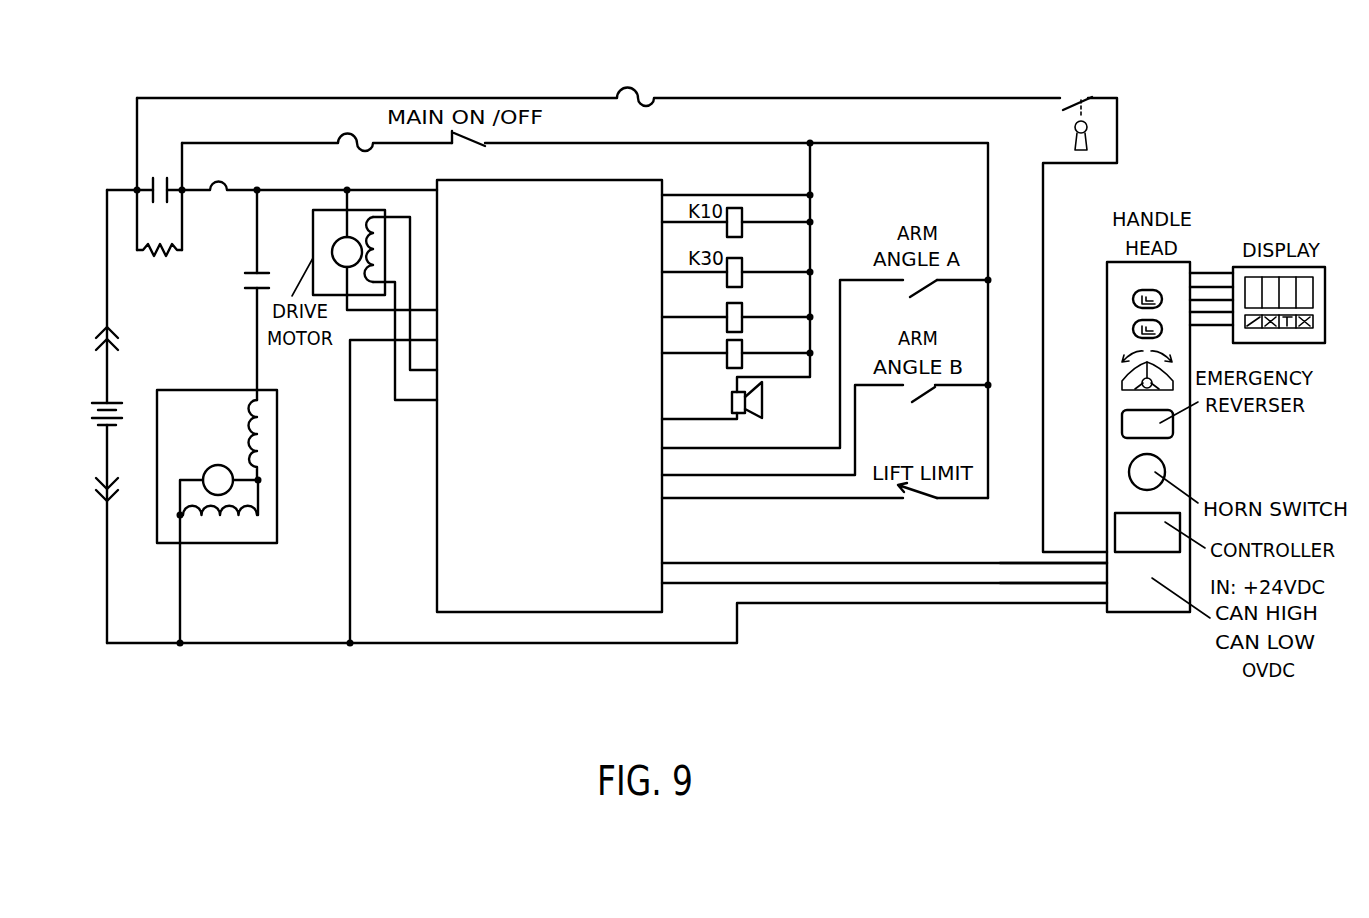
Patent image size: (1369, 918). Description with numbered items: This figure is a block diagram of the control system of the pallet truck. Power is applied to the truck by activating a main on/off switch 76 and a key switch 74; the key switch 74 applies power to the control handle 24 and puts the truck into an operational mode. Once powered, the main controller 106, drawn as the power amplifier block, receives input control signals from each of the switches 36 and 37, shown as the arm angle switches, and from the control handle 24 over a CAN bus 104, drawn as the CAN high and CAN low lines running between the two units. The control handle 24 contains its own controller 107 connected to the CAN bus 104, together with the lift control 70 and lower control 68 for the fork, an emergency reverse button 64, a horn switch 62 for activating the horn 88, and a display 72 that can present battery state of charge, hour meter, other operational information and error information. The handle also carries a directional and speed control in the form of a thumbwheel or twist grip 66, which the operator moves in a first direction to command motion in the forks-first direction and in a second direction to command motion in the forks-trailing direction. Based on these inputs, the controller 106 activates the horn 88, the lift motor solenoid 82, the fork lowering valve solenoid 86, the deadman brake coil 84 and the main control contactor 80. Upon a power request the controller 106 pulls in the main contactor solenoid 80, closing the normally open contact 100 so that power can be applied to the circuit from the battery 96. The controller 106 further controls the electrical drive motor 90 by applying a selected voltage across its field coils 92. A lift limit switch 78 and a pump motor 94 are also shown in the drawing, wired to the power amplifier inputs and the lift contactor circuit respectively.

The control handle 24 is at (1206, 454).
The switch 36 is at (923, 288).
The switch 37 is at (923, 393).
The horn switch 62 is at (1130, 472).
The emergency reverse button 64 is at (1122, 424).
The directional and speed control 66 is at (1122, 385).
The lower control 68 is at (1133, 298).
The lift control 70 is at (1133, 329).
The display 72 is at (1328, 277).
The key switch 74 is at (1075, 100).
The main on/off switch 76 is at (480, 141).
The lift limit switch 78 is at (907, 497).
The main control contactor 80 is at (742, 217).
The lift motor solenoid 82 is at (742, 262).
The deadman brake coil 84 is at (728, 312).
The fork lowering valve solenoid 86 is at (727, 360).
The horn 88 is at (763, 400).
The electrical drive motor 90 is at (333, 237).
The field coils 92 is at (380, 212).
The pump motor 94 is at (218, 465).
The battery 96 is at (100, 392).
The normally open contact 100 is at (152, 178).
The CAN bus 104 is at (1058, 585).
The controller 106 is at (492, 613).
The controller 107 is at (1115, 533).